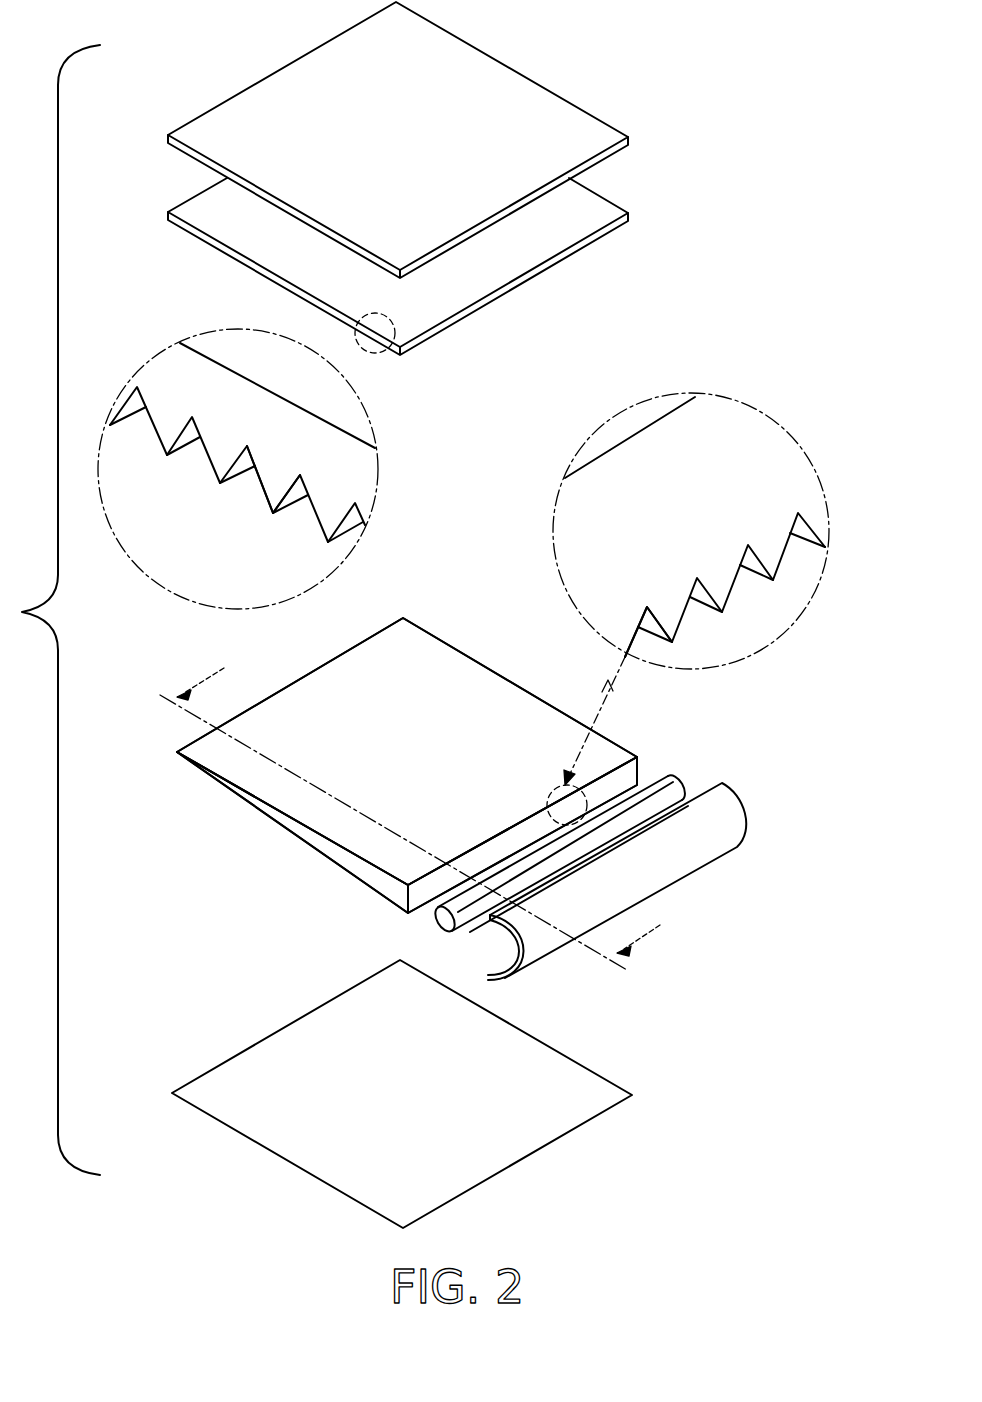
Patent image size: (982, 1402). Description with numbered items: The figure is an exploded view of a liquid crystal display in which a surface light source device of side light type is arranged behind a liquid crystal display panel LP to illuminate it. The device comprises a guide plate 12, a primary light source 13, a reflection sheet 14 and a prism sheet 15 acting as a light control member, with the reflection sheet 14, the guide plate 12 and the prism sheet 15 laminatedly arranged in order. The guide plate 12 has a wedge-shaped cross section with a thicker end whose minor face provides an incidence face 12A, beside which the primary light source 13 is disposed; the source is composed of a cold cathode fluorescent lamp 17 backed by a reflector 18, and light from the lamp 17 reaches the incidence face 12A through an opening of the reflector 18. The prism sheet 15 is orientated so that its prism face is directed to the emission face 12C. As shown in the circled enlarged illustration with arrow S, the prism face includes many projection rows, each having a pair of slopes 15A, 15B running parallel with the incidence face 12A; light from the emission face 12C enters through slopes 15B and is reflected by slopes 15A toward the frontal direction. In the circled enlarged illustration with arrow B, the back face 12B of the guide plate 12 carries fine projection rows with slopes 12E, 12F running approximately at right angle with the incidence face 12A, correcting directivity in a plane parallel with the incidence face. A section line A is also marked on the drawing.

The liquid crystal display panel LP is at (582, 132).
The prism sheet 15 is at (602, 218).
The slope 15A is at (200, 435).
The slope 15B is at (293, 483).
The arrow S is at (352, 346).
The guide plate 12 is at (215, 755).
The incidence face 12A is at (628, 773).
The back face 12B is at (287, 843).
The emission face 12C is at (317, 685).
The slope 12E is at (682, 598).
The slope 12F is at (648, 608).
The primary light source 13 is at (678, 955).
The reflection sheet 14 is at (470, 1170).
The cold cathode lamp 17 is at (647, 803).
The reflector 18 is at (732, 832).
The direction A is at (420, 806).
The arrow B is at (601, 721).